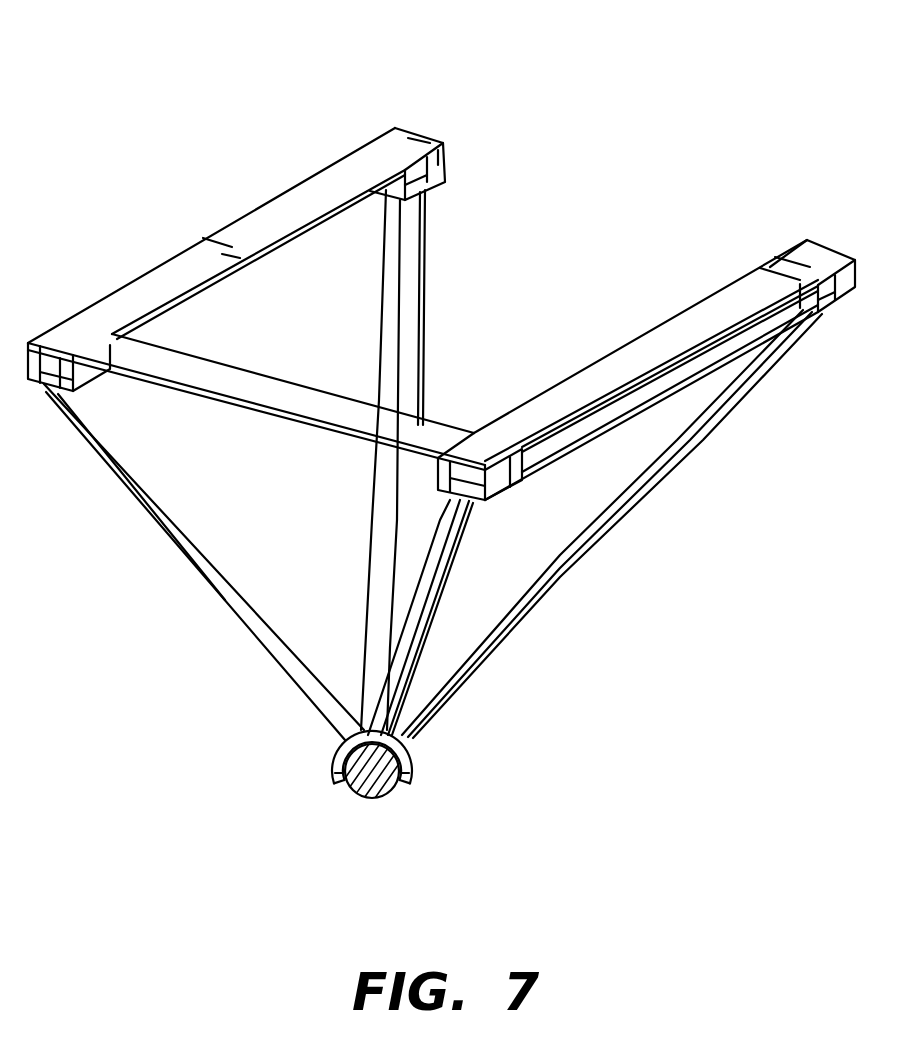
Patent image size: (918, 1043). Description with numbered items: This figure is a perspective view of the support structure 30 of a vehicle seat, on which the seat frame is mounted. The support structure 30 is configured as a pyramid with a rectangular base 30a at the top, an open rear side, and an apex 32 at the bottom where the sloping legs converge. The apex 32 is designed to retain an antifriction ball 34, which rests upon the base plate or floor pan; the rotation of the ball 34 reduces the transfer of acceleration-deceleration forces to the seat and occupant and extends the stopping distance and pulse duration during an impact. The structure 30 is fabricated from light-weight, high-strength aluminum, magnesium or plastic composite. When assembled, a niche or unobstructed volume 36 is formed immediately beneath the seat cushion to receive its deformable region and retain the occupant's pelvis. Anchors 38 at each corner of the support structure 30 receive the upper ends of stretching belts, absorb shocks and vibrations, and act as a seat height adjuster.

The support structure 30 is at (187, 80).
The rectangular base 30a is at (252, 211).
The apex 32 is at (411, 748).
The antifriction ball 34 is at (412, 771).
The niche 36 is at (348, 584).
The anchor 38 is at (28, 345).